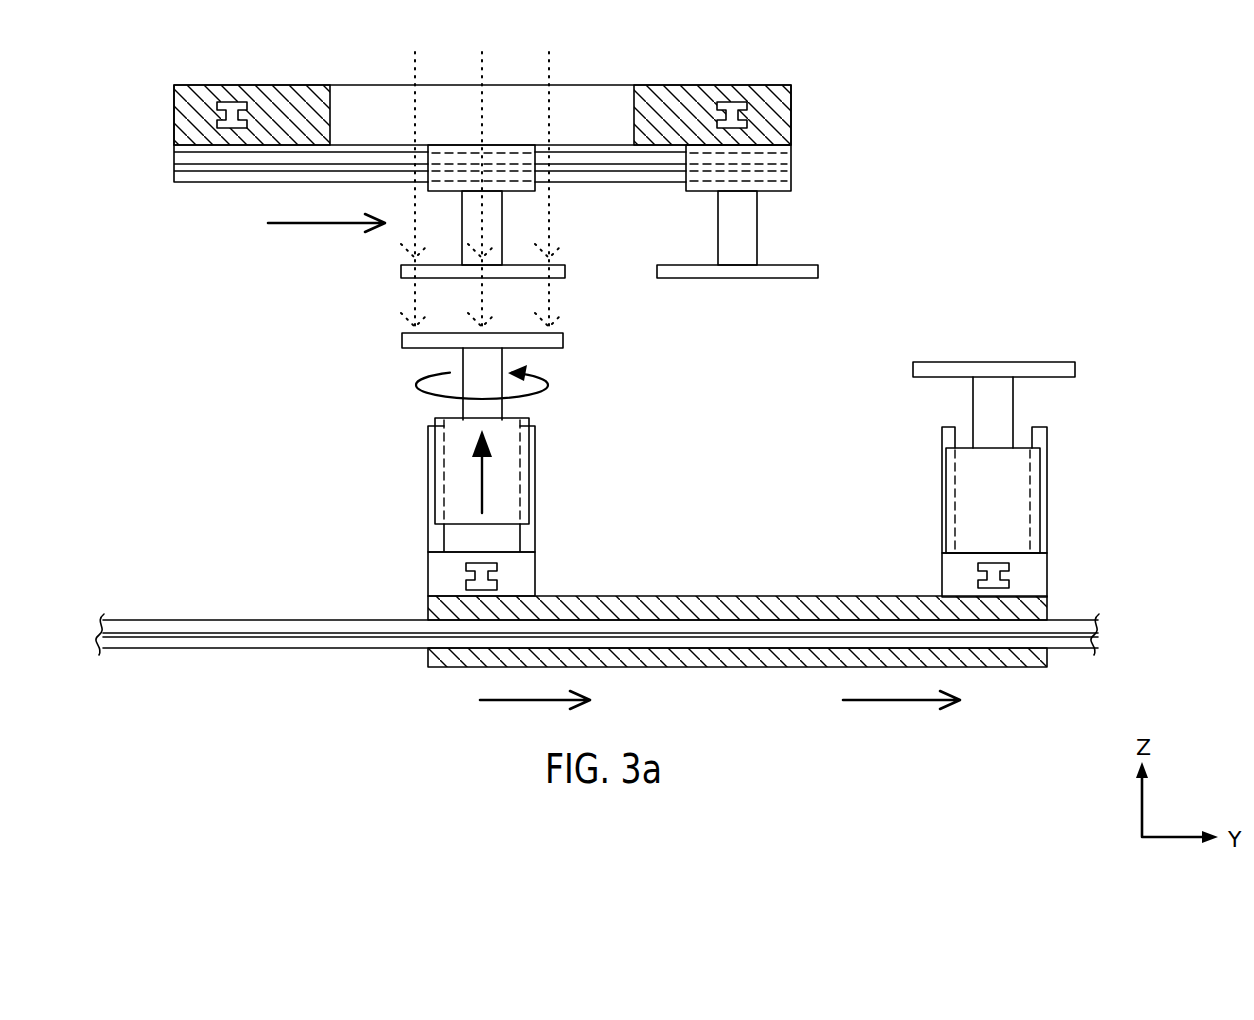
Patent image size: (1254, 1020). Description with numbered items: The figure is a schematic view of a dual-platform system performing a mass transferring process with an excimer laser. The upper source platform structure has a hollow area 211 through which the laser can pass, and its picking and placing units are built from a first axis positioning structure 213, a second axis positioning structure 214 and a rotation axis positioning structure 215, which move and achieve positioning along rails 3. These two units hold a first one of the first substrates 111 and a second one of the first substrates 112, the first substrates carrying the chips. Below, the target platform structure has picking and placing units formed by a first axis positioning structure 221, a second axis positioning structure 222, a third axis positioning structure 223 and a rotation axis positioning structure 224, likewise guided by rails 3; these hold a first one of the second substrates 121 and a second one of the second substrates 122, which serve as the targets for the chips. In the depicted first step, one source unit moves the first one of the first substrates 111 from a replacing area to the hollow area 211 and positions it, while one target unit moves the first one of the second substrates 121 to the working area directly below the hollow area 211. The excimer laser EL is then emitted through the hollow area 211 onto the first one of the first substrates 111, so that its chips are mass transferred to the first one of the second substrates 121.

The rails 3 is at (232, 115).
The excimer laser EL is at (551, 63).
The first one of the first substrates 111 is at (402, 267).
The second one of the first substrates 112 is at (813, 265).
The first one of the second substrates 121 is at (557, 340).
The second one of the second substrates 122 is at (1070, 370).
The hollow area 211 is at (357, 92).
The first axis positioning structure 213 is at (783, 128).
The second axis positioning structure 214 is at (788, 183).
The rotation axis positioning structure 215 is at (747, 220).
The first axis positioning structure 221 is at (438, 567).
The second axis positioning structure 222 is at (652, 597).
The third axis positioning structure 223 is at (458, 480).
The rotation axis positioning structure 224 is at (473, 362).